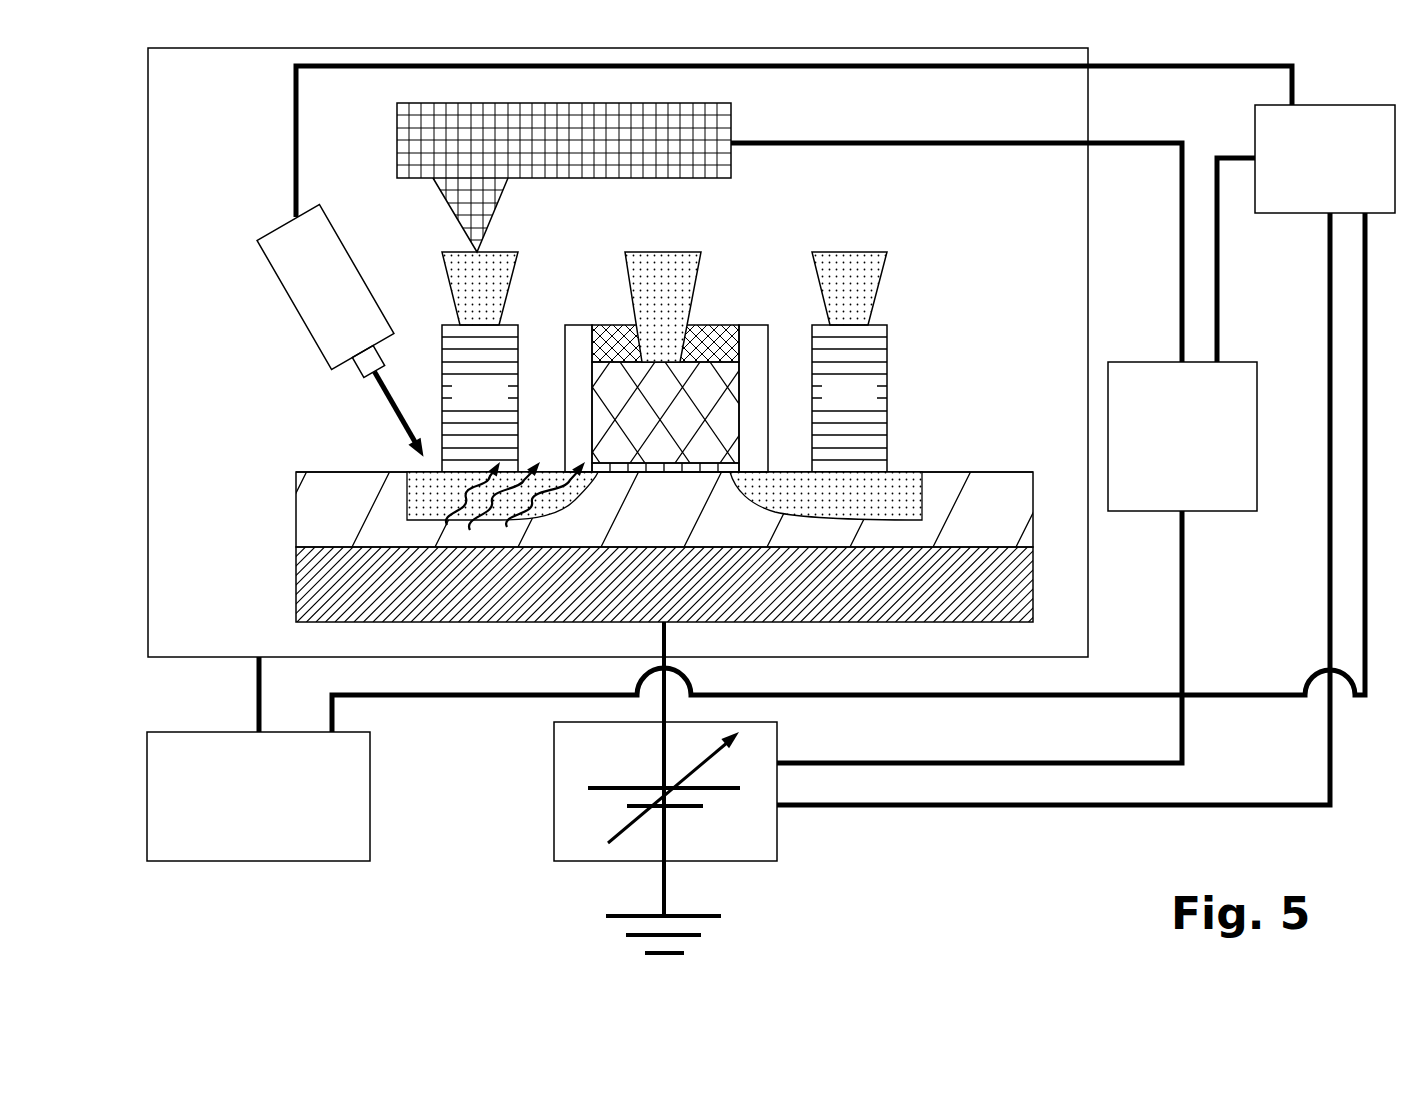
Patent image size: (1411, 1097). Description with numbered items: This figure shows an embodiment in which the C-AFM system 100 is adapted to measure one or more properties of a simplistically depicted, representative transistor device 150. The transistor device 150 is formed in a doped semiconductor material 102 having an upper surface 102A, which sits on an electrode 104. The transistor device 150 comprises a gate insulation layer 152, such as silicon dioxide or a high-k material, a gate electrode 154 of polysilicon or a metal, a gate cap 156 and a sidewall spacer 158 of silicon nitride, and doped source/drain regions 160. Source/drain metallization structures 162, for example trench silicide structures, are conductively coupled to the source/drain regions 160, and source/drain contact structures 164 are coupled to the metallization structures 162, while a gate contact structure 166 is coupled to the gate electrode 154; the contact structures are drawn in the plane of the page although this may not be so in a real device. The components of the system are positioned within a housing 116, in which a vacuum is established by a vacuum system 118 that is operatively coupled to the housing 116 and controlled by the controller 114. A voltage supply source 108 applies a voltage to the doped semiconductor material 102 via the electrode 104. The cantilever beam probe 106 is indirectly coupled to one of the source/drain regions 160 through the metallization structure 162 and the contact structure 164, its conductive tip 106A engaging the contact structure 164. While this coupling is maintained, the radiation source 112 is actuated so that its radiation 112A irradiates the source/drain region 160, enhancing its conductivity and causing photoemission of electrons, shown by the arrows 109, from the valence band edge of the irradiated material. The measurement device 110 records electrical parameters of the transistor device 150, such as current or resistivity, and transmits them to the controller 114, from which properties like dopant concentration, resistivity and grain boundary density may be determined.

The C-AFM system 100 is at (699, 435).
The doped semiconductor material 102 is at (661, 509).
The upper surface 102A is at (993, 472).
The electrode 104 is at (662, 584).
The cantilever beam probe 106 is at (564, 177).
The conductive tip 106A is at (470, 242).
The voltage supply source 108 is at (624, 787).
The arrows 109 is at (537, 515).
The measurement device 110 is at (1182, 436).
The radiation source 112 is at (331, 296).
The radiation 112A is at (392, 408).
The controller 114 is at (1325, 159).
The housing 116 is at (1088, 240).
The vacuum system 118 is at (258, 796).
The transistor device 150 is at (658, 389).
The gate insulation layer 152 is at (670, 472).
The gate electrode 154 is at (660, 412).
The gate cap 156 is at (620, 345).
The sidewall spacer 158 is at (573, 345).
The source/drain regions 160 is at (407, 500).
The source/drain metallization structures 162 is at (664, 398).
The source/drain contact structures 164 is at (664, 288).
The gate contact structure 166 is at (663, 307).